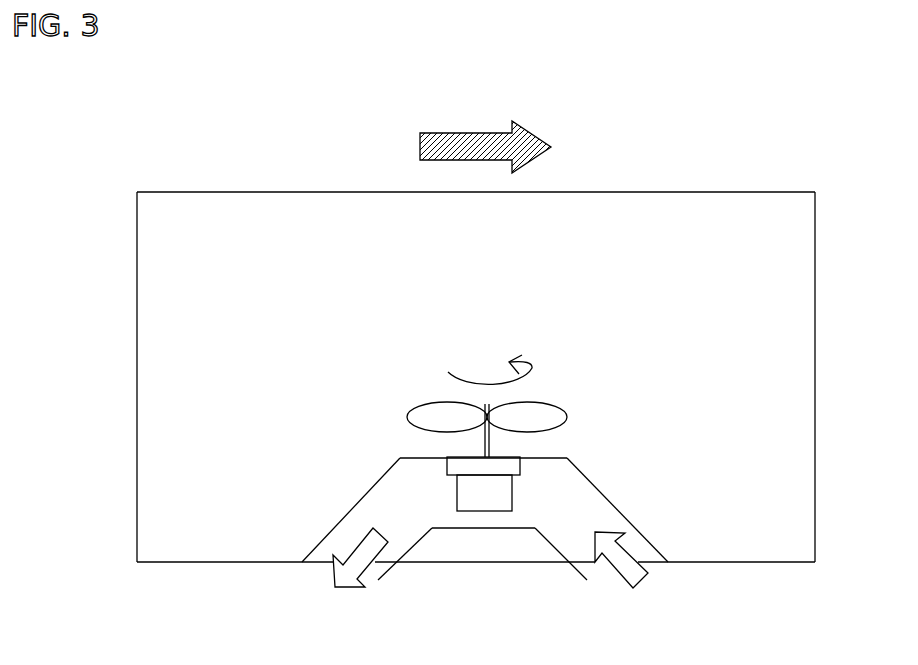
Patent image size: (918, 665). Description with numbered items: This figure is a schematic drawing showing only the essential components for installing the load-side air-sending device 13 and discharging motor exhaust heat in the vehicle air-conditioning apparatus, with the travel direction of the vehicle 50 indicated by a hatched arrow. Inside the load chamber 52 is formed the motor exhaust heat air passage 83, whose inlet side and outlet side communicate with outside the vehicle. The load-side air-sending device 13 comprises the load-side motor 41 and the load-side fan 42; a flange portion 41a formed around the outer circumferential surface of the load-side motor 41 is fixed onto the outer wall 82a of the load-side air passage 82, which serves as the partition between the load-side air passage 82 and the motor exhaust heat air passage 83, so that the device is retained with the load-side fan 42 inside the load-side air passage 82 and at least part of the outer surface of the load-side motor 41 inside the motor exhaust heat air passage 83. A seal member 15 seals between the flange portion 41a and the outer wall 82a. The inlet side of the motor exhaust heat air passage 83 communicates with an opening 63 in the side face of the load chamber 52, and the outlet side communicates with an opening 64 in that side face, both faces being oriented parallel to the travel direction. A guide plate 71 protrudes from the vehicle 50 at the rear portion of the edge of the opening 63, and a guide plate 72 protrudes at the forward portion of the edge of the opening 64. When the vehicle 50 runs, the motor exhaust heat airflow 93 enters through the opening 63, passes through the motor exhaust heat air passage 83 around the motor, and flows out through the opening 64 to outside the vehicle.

The vehicle 50 is at (195, 160).
The load chamber 52 is at (787, 191).
The load-side air passage 82 is at (772, 260).
The load-side air-sending device 13 is at (692, 142).
The load-side motor 41 is at (492, 487).
The flange portion 41a is at (462, 465).
The load-side fan 42 is at (548, 415).
The seal member 15 is at (440, 458).
The outer wall 82a is at (415, 457).
The guide plate 71 is at (482, 580).
The guide plate 72 is at (400, 568).
The motor exhaust heat air passage 83 is at (540, 515).
The opening 64 is at (318, 562).
The opening 63 is at (662, 562).
The motor exhaust heat airflow 93 is at (632, 570).